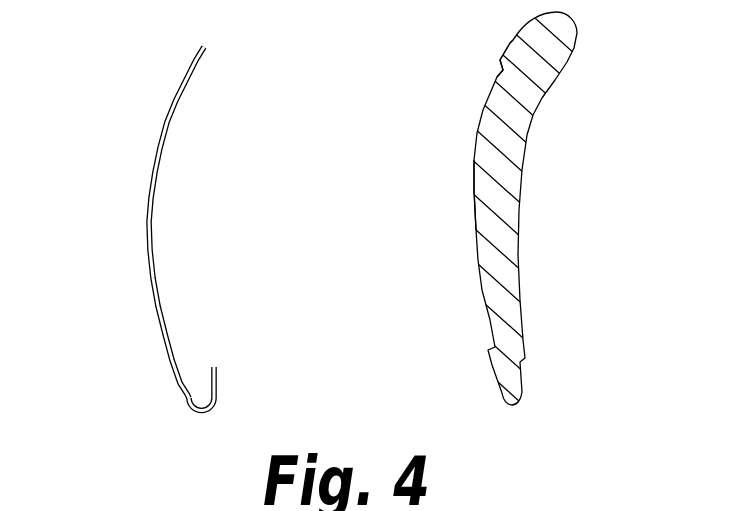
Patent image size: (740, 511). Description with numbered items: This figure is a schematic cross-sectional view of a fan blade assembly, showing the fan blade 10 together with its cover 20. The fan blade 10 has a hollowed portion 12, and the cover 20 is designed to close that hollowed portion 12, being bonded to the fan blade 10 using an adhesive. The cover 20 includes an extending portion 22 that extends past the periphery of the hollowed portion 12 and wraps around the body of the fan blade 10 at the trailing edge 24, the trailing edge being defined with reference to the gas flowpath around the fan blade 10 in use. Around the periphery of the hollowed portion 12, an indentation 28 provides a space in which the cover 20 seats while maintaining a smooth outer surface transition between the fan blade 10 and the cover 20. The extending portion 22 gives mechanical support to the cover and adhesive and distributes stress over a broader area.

The fan blade 10 is at (407, 220).
The hollowed portion 12 is at (442, 217).
The cover 20 is at (147, 222).
The extending portion 22 is at (218, 387).
The trailing edge 24 is at (517, 405).
The indentation 28 is at (474, 52).